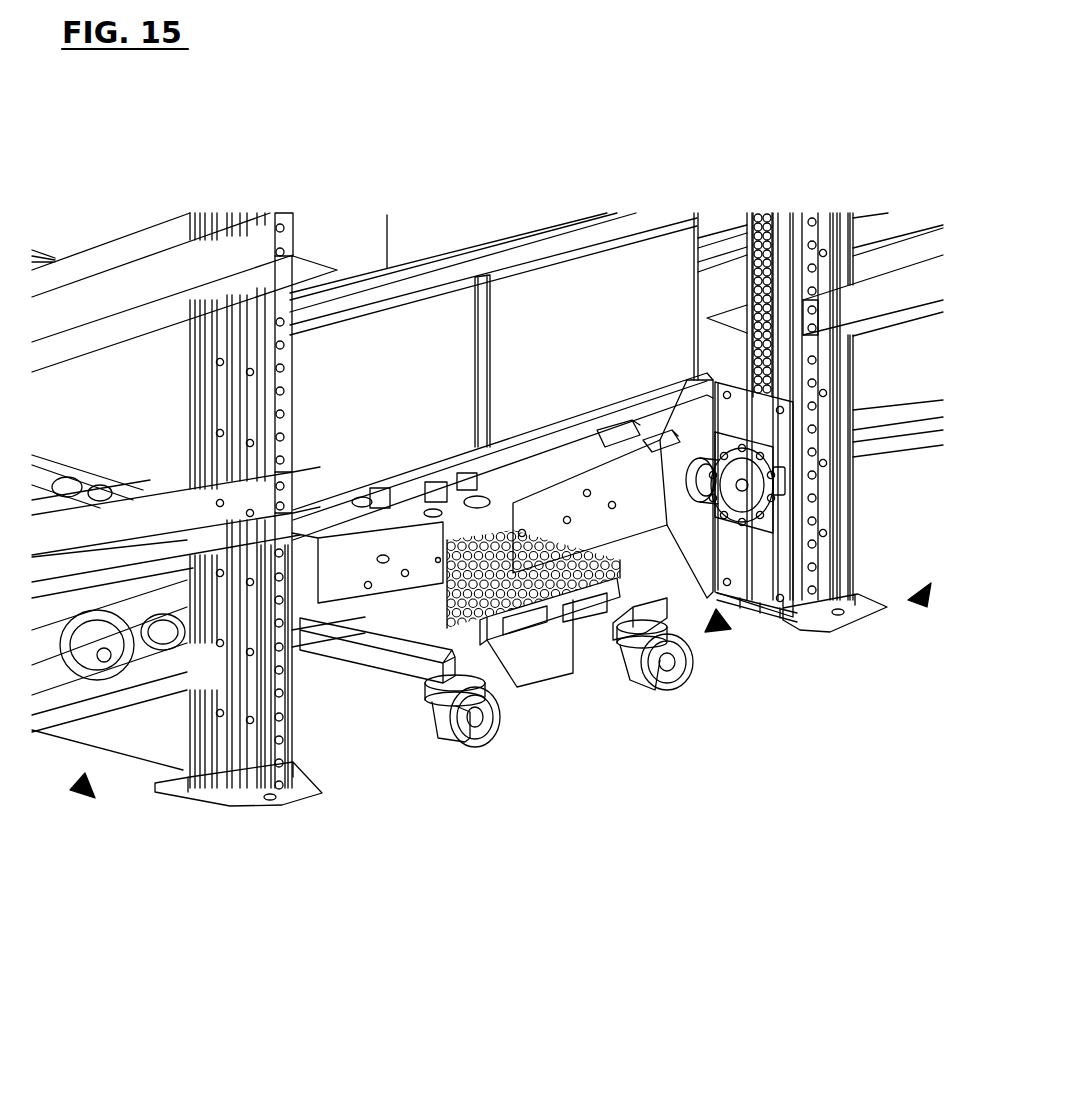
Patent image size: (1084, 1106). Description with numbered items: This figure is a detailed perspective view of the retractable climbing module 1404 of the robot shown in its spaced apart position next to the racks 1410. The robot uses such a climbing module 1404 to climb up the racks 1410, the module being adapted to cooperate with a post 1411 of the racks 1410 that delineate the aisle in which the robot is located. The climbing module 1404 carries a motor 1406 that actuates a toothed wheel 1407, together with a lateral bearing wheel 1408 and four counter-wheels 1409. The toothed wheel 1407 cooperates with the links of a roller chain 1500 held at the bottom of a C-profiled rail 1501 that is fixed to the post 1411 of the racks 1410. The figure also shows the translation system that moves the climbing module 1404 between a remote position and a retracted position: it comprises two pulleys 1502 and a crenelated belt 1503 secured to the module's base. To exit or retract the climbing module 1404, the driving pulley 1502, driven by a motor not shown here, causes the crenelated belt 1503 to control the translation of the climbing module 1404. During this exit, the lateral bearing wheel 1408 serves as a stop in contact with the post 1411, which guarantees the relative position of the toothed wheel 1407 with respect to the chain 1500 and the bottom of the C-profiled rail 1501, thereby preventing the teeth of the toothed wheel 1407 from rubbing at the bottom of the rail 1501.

The retractable climbing module 1404 is at (716, 630).
The motor 1406 is at (628, 420).
The toothed wheel 1407 is at (742, 505).
The lateral bearing wheel 1408 is at (773, 513).
The counter-wheels 1409 is at (745, 382).
The racks 1410 is at (82, 794).
The post 1411 is at (252, 370).
The roller chain 1500 is at (771, 214).
The C-profiled rail 1501 is at (785, 235).
The pulleys 1502 is at (316, 545).
The crenelated belt 1503 is at (460, 488).